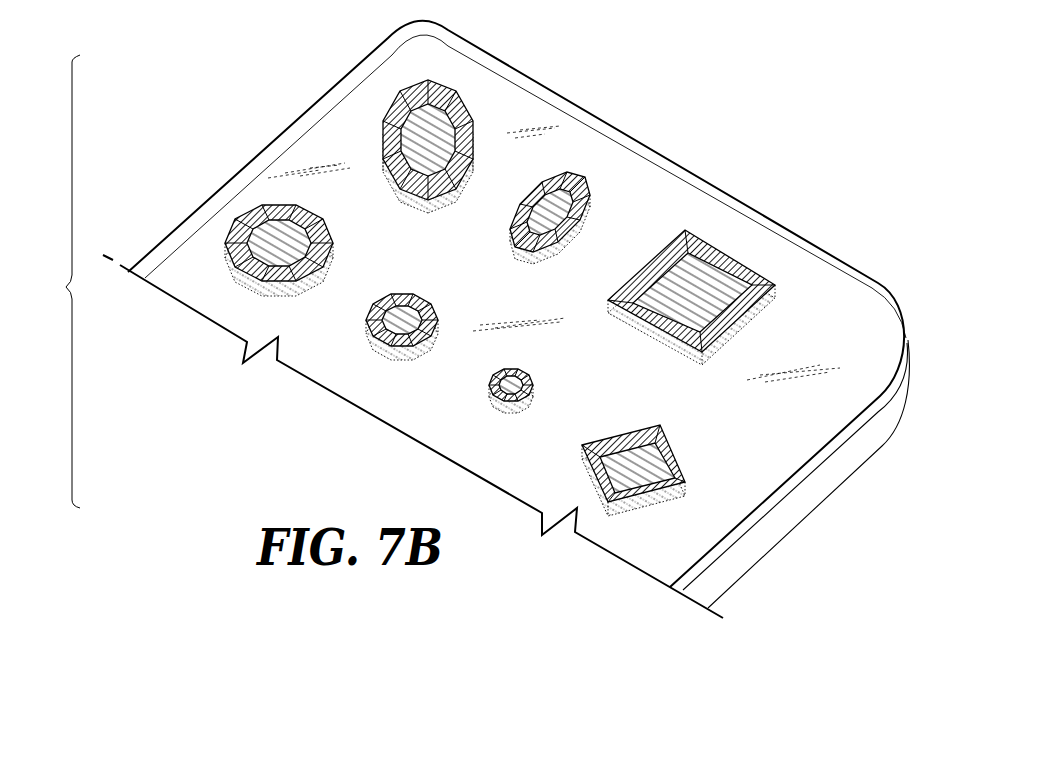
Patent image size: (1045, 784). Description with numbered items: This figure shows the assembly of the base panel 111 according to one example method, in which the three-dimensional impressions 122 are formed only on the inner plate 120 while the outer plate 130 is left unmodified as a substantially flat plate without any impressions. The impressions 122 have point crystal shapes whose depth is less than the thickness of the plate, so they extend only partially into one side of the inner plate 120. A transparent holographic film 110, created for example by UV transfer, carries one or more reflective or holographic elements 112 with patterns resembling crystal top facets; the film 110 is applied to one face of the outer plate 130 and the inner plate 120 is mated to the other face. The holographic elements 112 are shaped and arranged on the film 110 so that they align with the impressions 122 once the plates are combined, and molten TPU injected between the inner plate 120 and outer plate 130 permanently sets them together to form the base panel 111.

The holographic film 110 is at (800, 237).
The base panel 111 is at (55, 281).
The holographic elements 112 is at (460, 112).
The inner plate 120 is at (793, 502).
The 3D impressions 122 is at (307, 287).
The outer plate 130 is at (853, 423).